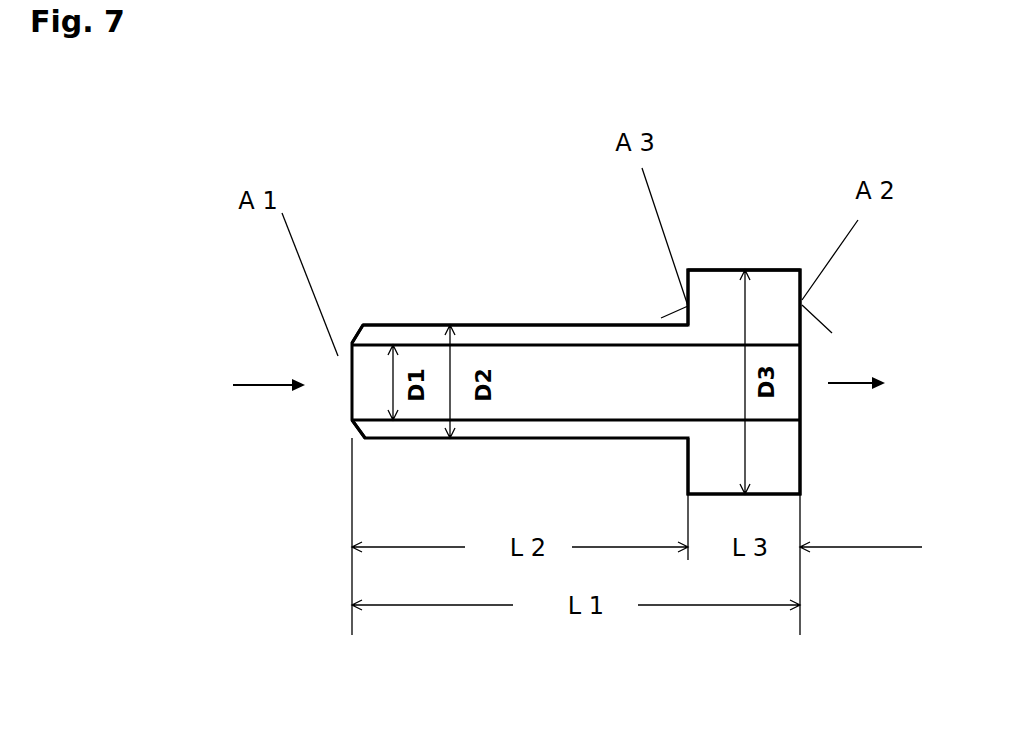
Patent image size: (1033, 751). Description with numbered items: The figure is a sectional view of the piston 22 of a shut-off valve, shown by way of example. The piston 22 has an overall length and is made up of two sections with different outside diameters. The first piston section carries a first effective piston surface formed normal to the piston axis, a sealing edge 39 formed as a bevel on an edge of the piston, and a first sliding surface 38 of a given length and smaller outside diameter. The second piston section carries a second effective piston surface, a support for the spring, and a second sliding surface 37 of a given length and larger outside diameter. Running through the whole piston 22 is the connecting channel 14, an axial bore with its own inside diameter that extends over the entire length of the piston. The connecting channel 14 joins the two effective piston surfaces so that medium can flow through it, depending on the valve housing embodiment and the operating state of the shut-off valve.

The connecting channel 14 is at (607, 382).
The piston 22 is at (772, 310).
The second sliding surface 37 is at (720, 265).
The first sliding surface 38 is at (513, 322).
The sealing edge 39 is at (354, 322).